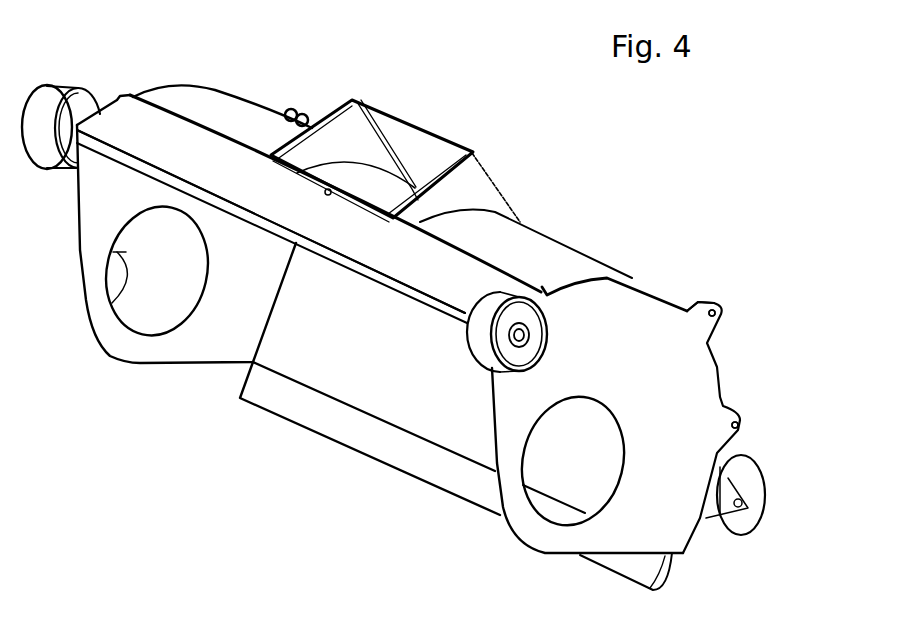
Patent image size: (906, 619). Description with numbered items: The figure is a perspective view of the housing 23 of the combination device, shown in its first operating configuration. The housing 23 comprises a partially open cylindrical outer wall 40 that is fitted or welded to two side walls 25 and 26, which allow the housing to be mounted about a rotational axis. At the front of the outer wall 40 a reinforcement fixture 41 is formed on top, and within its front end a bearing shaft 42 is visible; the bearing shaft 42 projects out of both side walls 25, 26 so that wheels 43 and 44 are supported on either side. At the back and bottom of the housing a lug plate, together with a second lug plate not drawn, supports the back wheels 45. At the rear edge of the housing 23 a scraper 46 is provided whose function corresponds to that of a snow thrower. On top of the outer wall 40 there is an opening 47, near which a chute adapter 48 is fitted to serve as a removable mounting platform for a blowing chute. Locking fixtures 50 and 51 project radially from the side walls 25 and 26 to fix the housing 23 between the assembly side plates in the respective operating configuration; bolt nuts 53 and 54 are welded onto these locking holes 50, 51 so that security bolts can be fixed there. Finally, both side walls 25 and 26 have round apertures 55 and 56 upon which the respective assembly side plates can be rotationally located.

The housing 23 is at (262, 432).
The side wall 25 is at (537, 540).
The side wall 26 is at (145, 352).
The outer wall 40 is at (540, 250).
The reinforcement fixture 41 is at (160, 133).
The bearing shaft 42 is at (252, 214).
The wheel 43 is at (533, 331).
The wheel 44 is at (52, 100).
The back wheel 45 is at (745, 525).
The scraper 46 is at (352, 437).
The opening 47 is at (397, 190).
The chute adapter 48 is at (383, 112).
The locking fixture 50 is at (742, 417).
The locking fixture 51 is at (288, 108).
The bolt nut 53 is at (704, 298).
The bolt nut 54 is at (309, 113).
The round aperture 55 is at (622, 450).
The round aperture 56 is at (112, 303).